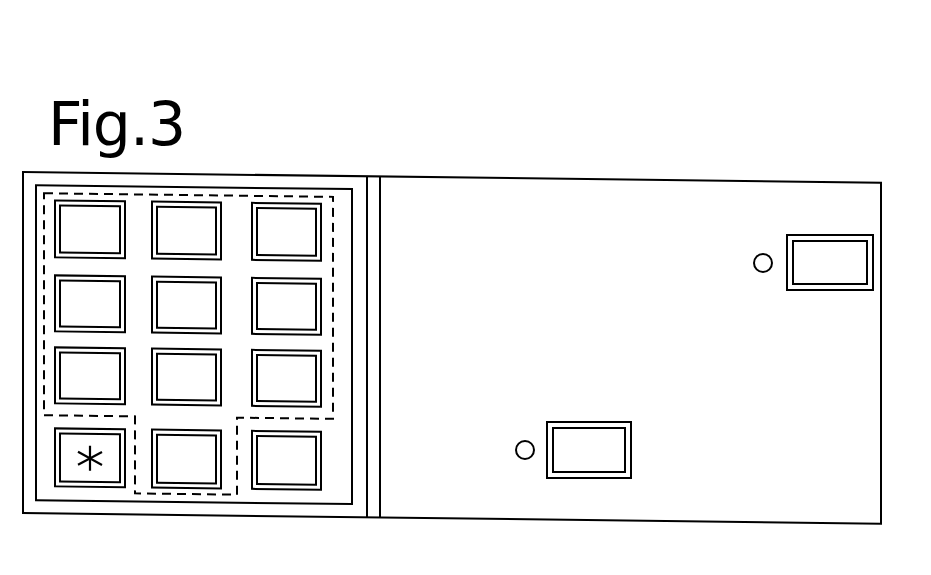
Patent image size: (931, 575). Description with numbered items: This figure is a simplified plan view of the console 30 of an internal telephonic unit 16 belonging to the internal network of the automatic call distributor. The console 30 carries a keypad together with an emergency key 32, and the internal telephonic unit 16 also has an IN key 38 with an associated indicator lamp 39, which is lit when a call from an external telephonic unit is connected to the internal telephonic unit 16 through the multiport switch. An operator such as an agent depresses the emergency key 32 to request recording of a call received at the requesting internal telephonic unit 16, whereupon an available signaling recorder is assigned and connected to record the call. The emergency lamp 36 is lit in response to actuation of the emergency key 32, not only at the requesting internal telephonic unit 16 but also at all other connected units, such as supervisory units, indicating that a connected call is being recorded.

The internal telephonic unit 16 is at (539, 102).
The console 30 is at (453, 198).
The emergency key 32 is at (852, 243).
The emergency lamp 36 is at (763, 254).
The IN key 38 is at (627, 422).
The indicator lamp 39 is at (528, 441).